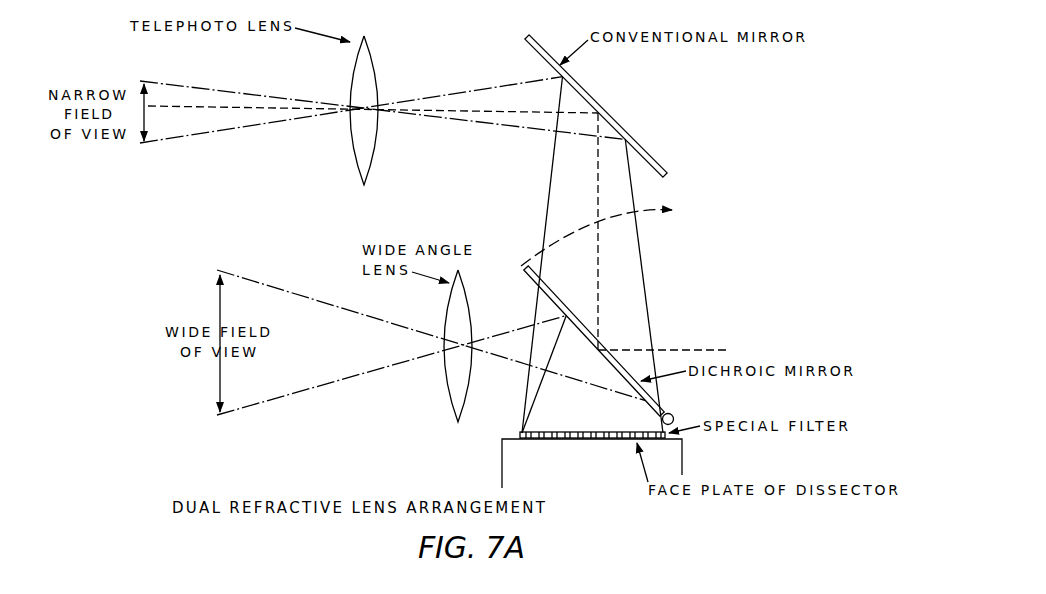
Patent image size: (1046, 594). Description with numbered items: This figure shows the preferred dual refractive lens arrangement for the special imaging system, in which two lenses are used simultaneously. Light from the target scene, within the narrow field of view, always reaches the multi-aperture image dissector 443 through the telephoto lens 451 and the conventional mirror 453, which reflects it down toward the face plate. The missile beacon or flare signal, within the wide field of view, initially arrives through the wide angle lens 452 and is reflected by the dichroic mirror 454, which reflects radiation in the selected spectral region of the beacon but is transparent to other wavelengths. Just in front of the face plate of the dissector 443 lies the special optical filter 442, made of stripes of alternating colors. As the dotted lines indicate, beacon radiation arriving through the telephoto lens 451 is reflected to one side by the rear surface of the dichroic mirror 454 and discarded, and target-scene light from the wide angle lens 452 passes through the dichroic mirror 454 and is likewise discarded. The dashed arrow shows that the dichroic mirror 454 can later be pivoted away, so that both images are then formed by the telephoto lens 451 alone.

The telephoto lens 451 is at (375, 72).
The wide angle lens 452 is at (447, 387).
The conventional mirror 453 is at (524, 38).
The dichroic mirror 454 is at (532, 277).
The special optical filter 442 is at (593, 432).
The multi-aperture image dissector 443 is at (503, 469).